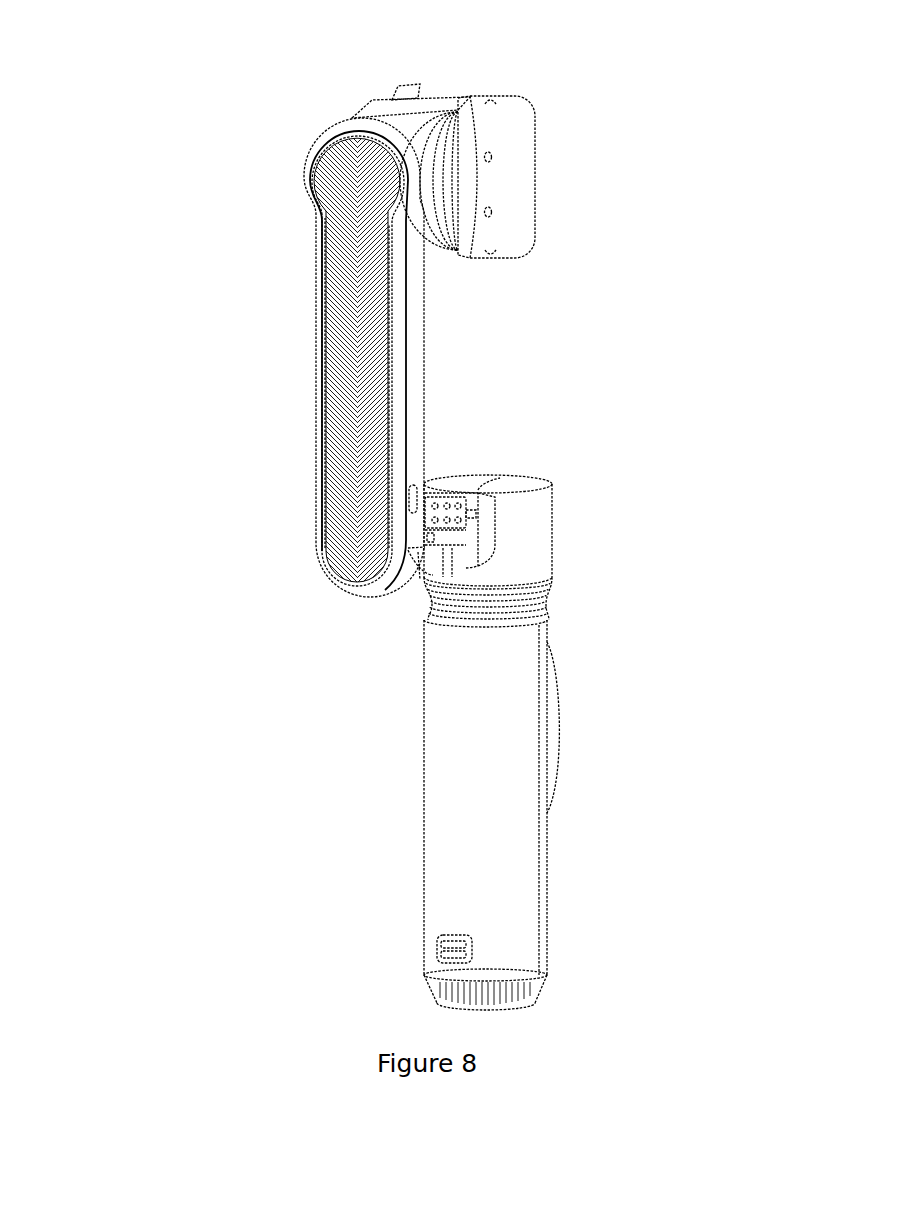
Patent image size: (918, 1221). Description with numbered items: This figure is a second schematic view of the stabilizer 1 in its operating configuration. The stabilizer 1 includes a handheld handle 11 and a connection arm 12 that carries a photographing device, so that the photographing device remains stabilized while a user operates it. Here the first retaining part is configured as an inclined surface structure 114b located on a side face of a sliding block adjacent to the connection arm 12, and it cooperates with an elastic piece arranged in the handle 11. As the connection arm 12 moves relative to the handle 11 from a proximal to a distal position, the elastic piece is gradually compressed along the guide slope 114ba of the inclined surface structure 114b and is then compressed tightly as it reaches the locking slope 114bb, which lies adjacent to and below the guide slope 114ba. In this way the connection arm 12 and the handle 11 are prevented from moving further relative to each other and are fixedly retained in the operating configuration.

The stabilizer 1 is at (40, 46).
The handle 11 is at (443, 777).
The connection arm 12 is at (343, 333).
The inclined surface structure 114b is at (737, 450).
The guide slope 114ba is at (473, 503).
The locking slope 114bb is at (473, 545).